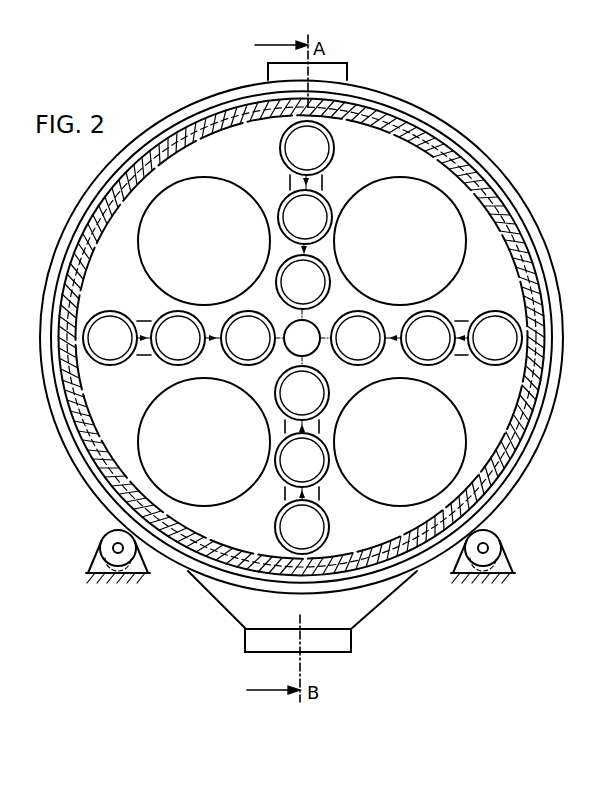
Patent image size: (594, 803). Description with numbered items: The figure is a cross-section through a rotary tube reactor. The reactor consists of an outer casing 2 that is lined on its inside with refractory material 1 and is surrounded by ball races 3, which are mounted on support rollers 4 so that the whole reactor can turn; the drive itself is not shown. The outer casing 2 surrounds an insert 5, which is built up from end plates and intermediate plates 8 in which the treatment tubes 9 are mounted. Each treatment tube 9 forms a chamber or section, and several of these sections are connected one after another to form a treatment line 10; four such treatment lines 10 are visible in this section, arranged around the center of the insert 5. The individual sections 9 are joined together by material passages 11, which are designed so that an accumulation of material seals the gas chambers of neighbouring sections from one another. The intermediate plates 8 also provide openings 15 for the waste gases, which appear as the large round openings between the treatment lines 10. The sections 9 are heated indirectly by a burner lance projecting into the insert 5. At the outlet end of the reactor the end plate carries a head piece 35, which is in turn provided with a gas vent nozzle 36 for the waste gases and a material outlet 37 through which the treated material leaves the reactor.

The refractory material 1 is at (403, 101).
The outer casing 2 is at (427, 122).
The ball races 3 is at (460, 138).
The support rollers 4 is at (108, 534).
The insert 5 is at (482, 160).
The intermediate plates 8 is at (507, 183).
The treatment tubes 9 is at (330, 228).
The treatment line 10 is at (463, 305).
The material passages 11 is at (458, 354).
The openings 15 is at (292, 350).
The head piece 35 is at (372, 600).
The gas vent nozzle 36 is at (335, 76).
The material outlet 37 is at (352, 645).